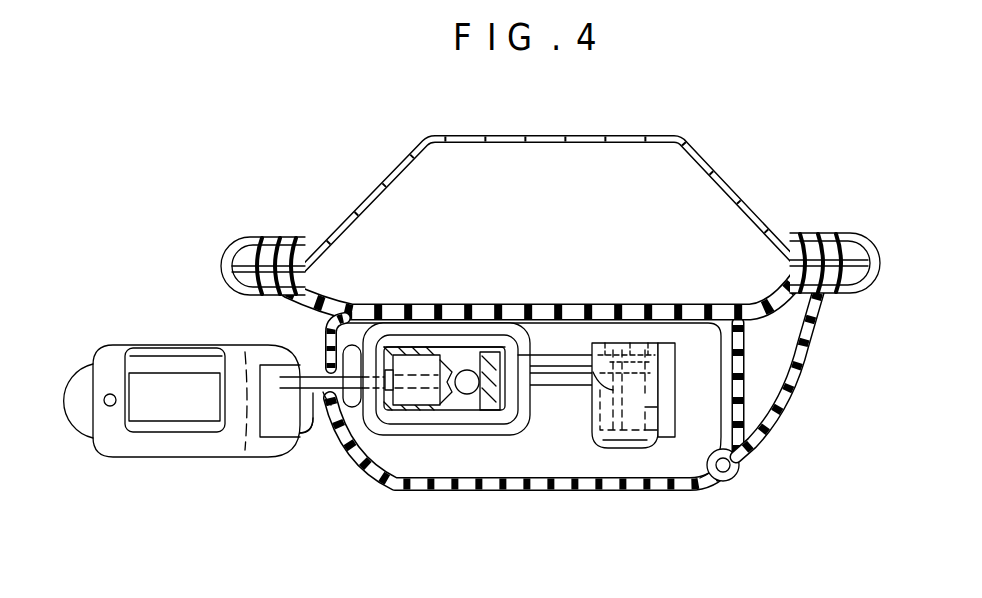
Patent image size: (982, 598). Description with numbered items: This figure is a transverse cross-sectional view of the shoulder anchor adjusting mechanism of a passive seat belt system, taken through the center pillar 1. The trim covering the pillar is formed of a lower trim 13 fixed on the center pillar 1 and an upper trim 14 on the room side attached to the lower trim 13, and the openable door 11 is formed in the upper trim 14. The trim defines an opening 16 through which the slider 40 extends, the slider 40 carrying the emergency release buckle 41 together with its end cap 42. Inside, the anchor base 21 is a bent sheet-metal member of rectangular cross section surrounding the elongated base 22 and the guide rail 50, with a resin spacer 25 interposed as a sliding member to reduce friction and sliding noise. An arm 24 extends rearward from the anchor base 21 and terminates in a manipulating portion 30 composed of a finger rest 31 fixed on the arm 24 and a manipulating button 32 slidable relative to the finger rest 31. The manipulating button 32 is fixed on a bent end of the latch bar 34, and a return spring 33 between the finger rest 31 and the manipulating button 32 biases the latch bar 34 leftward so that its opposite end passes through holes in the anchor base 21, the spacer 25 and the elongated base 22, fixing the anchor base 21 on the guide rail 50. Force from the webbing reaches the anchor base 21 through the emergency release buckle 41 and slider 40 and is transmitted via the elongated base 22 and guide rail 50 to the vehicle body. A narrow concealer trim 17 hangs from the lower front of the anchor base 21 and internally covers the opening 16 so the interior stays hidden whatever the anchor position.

The center pillar 1 is at (598, 302).
The door 11 is at (700, 494).
The lower trim 13 is at (748, 358).
The upper trim 14 is at (787, 420).
The opening 16 is at (302, 440).
The concealer trim 17 is at (323, 392).
The anchor base 21 is at (388, 440).
The elongated base 22 is at (480, 425).
The arm 24 is at (568, 357).
The spacer 25 is at (412, 343).
The manipulating portion 30 is at (637, 445).
The finger rest 31 is at (693, 398).
The manipulating button 32 is at (617, 448).
The return spring 33 is at (635, 345).
The latch bar 34 is at (558, 395).
The slider 40 is at (313, 377).
The emergency release buckle 41 is at (118, 345).
The key end cap 42 is at (84, 420).
The guide rail 50 is at (447, 420).